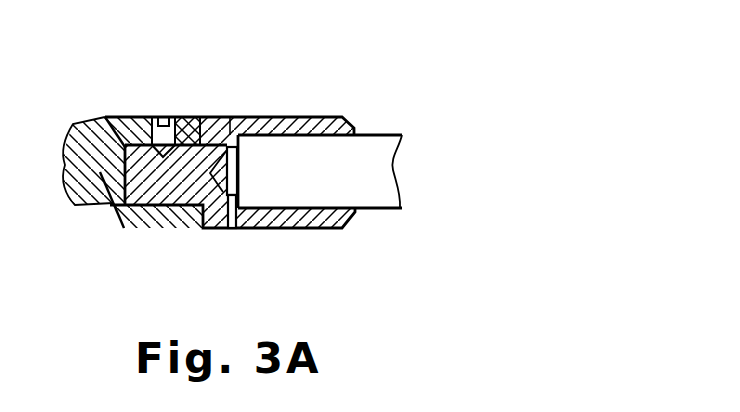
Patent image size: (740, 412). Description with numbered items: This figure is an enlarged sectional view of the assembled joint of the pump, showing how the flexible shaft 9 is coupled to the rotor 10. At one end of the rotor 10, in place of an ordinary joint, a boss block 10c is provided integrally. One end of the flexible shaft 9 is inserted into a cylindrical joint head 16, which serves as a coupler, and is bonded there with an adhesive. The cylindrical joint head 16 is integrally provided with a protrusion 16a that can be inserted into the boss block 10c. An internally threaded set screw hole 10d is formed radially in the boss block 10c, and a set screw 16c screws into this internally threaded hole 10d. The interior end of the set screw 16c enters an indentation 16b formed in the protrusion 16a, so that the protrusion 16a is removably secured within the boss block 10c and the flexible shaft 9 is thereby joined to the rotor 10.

The rotor 10 is at (92, 133).
The internally threaded set screw hole 10d is at (150, 118).
The set screw 16c is at (165, 118).
The indentation 16b is at (195, 118).
The cylindrical joint head 16 is at (288, 213).
The protrusion 16a is at (140, 223).
The boss block 10c is at (176, 212).
The flexible shaft 9 is at (374, 192).